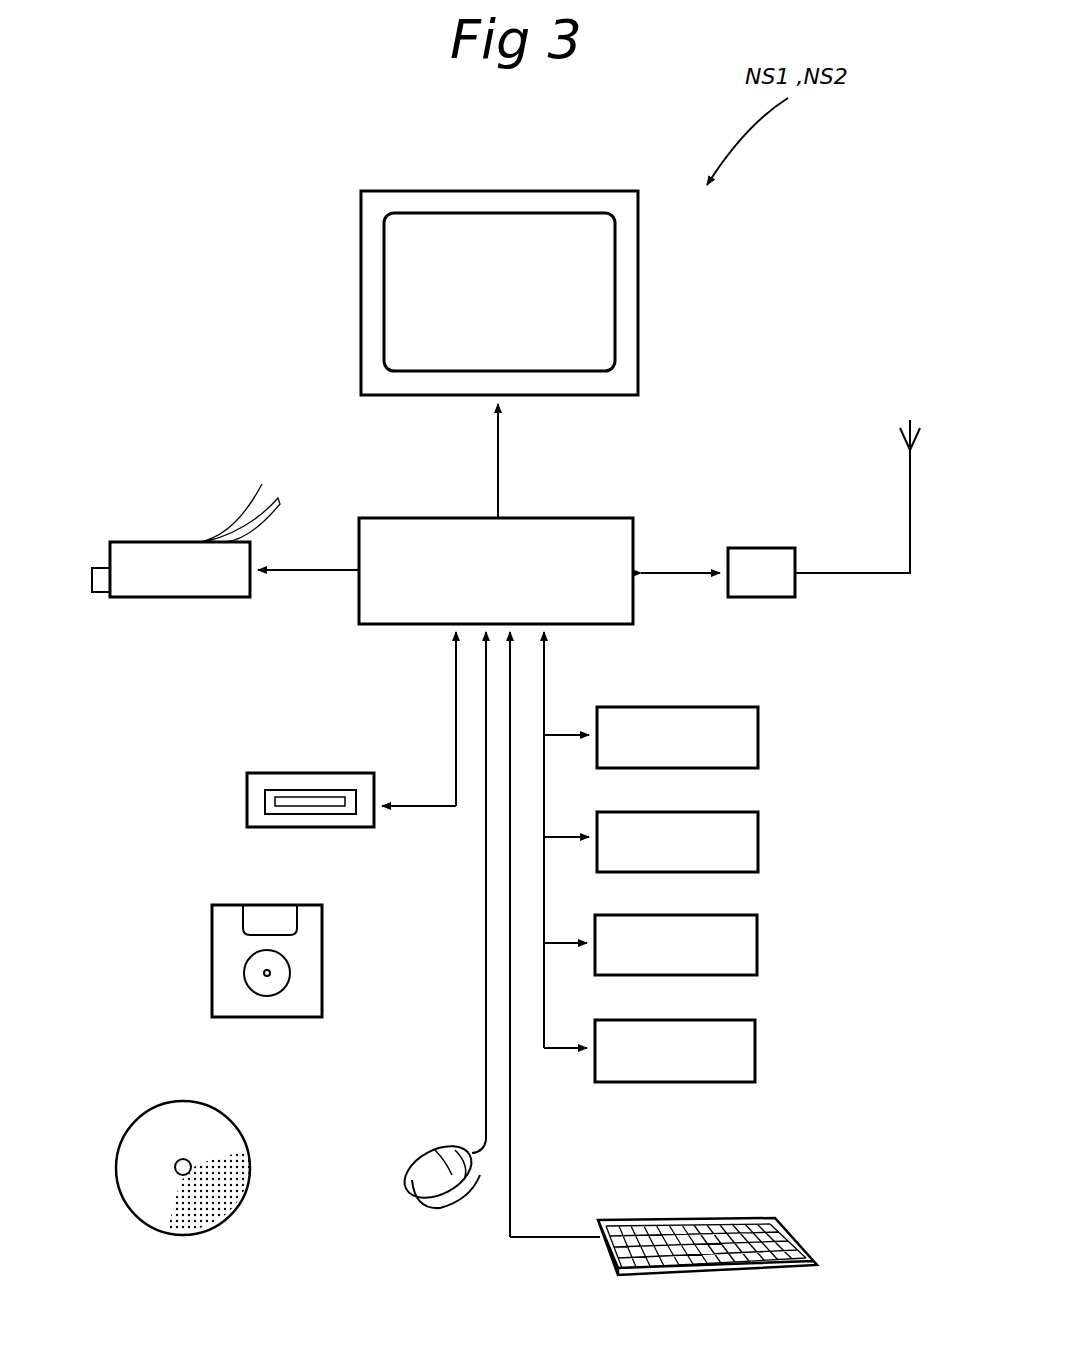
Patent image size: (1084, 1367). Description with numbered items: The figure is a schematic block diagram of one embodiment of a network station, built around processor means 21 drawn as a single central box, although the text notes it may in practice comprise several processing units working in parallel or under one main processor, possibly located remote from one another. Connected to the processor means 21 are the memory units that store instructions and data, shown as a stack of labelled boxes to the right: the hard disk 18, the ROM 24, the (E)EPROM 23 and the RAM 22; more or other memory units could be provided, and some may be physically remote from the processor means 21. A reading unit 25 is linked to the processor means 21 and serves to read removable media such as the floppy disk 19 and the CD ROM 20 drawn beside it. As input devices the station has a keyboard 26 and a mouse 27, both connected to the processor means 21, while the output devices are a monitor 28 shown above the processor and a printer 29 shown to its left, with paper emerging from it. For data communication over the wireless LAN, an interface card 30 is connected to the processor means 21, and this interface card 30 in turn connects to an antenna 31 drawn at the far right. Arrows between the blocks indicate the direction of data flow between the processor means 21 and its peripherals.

The hard disk 18 is at (752, 722).
The floppy disk 19 is at (230, 940).
The CD ROM 20 is at (187, 1110).
The processor means 21 is at (426, 530).
The RAM 22 is at (750, 1040).
The (E)EPROM 23 is at (752, 935).
The ROM 24 is at (752, 828).
The reading unit 25 is at (272, 782).
The keyboard 26 is at (773, 1215).
The mouse 27 is at (432, 1152).
The monitor 28 is at (500, 235).
The printer 29 is at (178, 548).
The interface card 30 is at (770, 560).
The antenna 31 is at (908, 500).